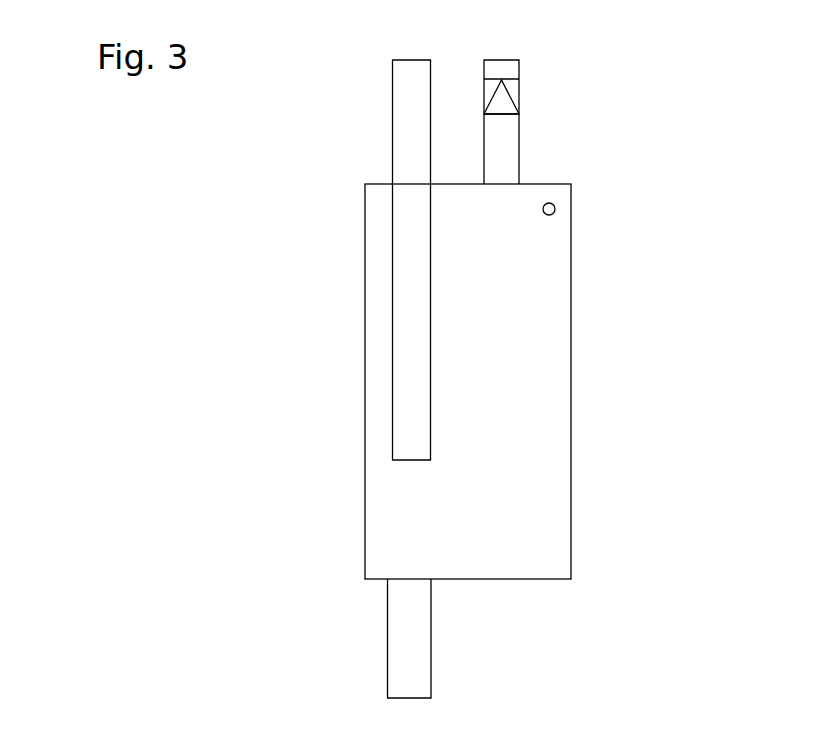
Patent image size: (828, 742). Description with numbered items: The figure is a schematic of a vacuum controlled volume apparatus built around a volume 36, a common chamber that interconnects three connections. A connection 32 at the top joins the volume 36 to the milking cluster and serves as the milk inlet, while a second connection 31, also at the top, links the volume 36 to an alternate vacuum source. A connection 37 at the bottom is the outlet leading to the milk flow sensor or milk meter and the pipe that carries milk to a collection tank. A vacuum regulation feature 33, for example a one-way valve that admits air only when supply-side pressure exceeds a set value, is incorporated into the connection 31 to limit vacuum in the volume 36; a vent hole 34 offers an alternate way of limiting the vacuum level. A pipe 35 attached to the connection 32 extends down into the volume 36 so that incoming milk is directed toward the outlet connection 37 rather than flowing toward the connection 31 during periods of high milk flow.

The connection 31 is at (504, 155).
The connection 32 is at (419, 146).
The vacuum regulation feature 33 is at (501, 102).
The vent hole 34 is at (555, 207).
The pipe 35 is at (413, 347).
The volume 36 is at (507, 365).
The connection 37 is at (408, 632).